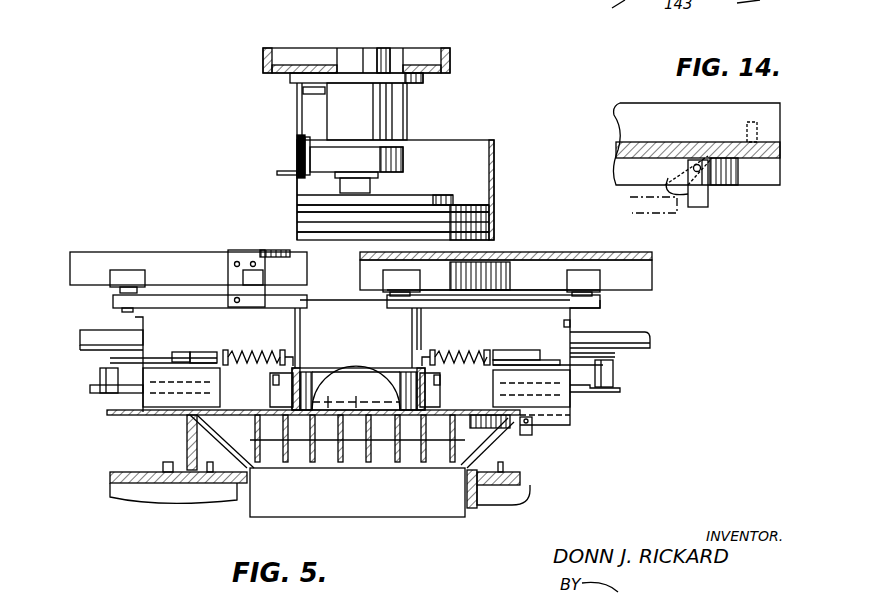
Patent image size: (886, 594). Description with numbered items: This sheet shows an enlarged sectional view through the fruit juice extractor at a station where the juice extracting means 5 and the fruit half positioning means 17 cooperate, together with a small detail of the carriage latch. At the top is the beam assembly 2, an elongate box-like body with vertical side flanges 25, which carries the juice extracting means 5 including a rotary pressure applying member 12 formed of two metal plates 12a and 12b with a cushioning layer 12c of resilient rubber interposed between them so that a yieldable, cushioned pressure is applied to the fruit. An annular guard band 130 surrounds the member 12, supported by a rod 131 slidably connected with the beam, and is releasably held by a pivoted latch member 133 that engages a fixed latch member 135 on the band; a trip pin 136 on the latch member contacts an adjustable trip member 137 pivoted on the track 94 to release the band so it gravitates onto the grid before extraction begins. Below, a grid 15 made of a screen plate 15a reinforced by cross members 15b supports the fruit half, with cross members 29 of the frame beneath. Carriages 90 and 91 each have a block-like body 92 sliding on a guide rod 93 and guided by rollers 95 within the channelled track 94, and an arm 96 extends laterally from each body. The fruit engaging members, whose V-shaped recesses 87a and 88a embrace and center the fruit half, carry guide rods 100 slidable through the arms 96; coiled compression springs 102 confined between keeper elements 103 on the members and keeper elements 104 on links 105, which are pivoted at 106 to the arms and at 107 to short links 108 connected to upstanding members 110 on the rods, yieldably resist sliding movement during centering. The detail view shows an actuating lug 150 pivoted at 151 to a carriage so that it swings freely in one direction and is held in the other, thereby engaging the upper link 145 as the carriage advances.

In FIG. 5, the beam assembly 2 is at (454, 70).
In FIG. 5, the juice extracting means 5 is at (295, 213).
In FIG. 5, the rotary pressure applying member 12 is at (440, 193).
In FIG. 5, the metal plate 12a is at (489, 205).
In FIG. 5, the metal plate 12b is at (489, 230).
In FIG. 5, the cushioning layer 12c is at (489, 216).
In FIG. 5, the grid 15 is at (445, 458).
In FIG. 5, the screen plate 15a is at (195, 416).
In FIG. 5, the cross member 15b is at (364, 462).
In FIG. 5, the fruit half positioning means 17 is at (402, 365).
In FIG. 5, the side flange 25 is at (446, 56).
In FIG. 5, the cross member 29 is at (230, 498).
In FIG. 5, the fruit half receiving recess 87a is at (312, 374).
In FIG. 5, the fruit half receiving recess 88a is at (412, 372).
In FIG. 5, the carriage 90 is at (136, 317).
In FIG. 14, the carriage 90 is at (640, 101).
In FIG. 5, the carriage 91 is at (575, 325).
In FIG. 5, the block-like body 92 is at (353, 306).
In FIG. 14, the block-like body 92 is at (773, 119).
In FIG. 5, the guide rod 93 is at (632, 335).
In FIG. 5, the channelled track 94 is at (566, 253).
In FIG. 5, the roller 95 is at (140, 270).
In FIG. 5, the arm 96 is at (150, 400).
In FIG. 5, the guide rod 100 is at (100, 392).
In FIG. 5, the coiled compression spring 102 is at (255, 352).
In FIG. 5, the keeper element 103 is at (290, 352).
In FIG. 5, the keeper element 104 is at (226, 350).
In FIG. 5, the link 105 is at (205, 352).
In FIG. 5, the pivot 106 is at (174, 352).
In FIG. 5, the pivot 107 is at (488, 350).
In FIG. 5, the short link 108 is at (110, 358).
In FIG. 5, the upstanding member 110 is at (100, 380).
In FIG. 5, the annular guard band 130 is at (495, 165).
In FIG. 5, the rod 131 is at (405, 115).
In FIG. 5, the latch member 133 is at (297, 108).
In FIG. 5, the fixed latch member 135 is at (297, 138).
In FIG. 5, the trip pin 136 is at (277, 173).
In FIG. 5, the trip member 137 is at (262, 250).
In FIG. 14, the upper link 145 is at (668, 215).
In FIG. 5, the actuating lug 150 is at (533, 430).
In FIG. 14, the actuating lug 150 is at (707, 193).
In FIG. 14, the pivot 151 is at (708, 158).